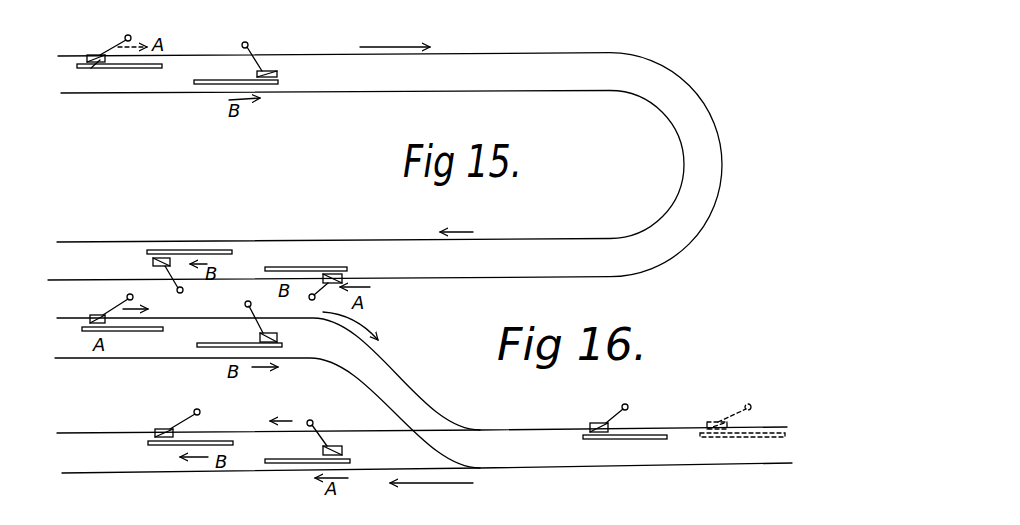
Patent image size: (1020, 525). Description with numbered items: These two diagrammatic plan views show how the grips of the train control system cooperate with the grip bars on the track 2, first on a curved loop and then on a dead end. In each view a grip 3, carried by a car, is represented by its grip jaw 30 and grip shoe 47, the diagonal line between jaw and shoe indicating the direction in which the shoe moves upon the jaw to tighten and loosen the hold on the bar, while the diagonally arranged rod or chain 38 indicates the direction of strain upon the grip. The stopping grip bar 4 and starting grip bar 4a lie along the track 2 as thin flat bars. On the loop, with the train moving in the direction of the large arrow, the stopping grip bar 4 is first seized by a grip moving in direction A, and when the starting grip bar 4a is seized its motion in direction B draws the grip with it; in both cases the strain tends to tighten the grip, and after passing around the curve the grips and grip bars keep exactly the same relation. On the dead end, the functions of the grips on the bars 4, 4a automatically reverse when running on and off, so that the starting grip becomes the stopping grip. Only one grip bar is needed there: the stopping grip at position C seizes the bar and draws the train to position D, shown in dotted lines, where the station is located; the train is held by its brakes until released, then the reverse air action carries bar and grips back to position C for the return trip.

In FIG. 15, the track 2 is at (670, 72).
In FIG. 16, the track 2 is at (537, 427).
In FIG. 15, the grip 3 is at (236, 72).
In FIG. 15, the stopping grip bar 4 is at (140, 67).
In FIG. 16, the stopping grip bar 4 is at (131, 332).
In FIG. 15, the starting grip bar 4a is at (205, 250).
In FIG. 16, the starting grip bar 4a is at (233, 339).
In FIG. 15, the grip jaw 30 is at (92, 55).
In FIG. 15, the rod or chain 38 is at (103, 54).
In FIG. 15, the grip shoe 47 is at (91, 68).
In FIG. 16, the position C is at (625, 414).
In FIG. 16, the position D is at (742, 408).